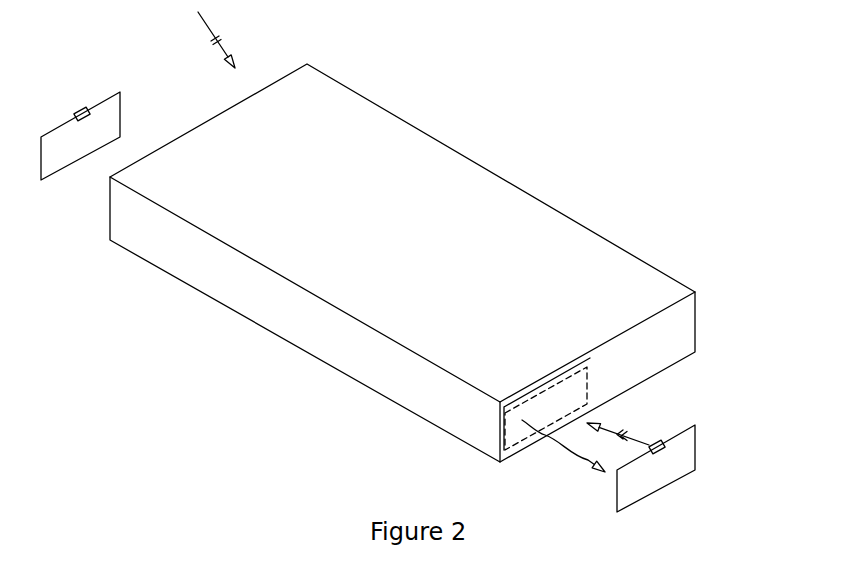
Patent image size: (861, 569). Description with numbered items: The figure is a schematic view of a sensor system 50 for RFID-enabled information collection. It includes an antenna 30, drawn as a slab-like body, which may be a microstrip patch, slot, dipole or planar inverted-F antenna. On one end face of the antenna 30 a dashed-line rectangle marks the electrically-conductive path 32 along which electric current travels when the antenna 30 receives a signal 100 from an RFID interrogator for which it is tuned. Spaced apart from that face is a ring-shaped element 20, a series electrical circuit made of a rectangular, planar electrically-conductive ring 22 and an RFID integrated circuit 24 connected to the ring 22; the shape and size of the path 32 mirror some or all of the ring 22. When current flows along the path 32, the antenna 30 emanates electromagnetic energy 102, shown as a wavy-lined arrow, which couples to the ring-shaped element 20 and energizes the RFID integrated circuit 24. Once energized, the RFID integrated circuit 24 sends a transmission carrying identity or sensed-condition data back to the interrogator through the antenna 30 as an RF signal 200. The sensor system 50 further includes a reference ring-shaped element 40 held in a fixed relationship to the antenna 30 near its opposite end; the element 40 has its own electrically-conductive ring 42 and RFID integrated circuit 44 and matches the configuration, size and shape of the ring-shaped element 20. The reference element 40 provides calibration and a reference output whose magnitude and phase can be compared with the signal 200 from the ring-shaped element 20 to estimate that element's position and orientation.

The signal 100 is at (210, 27).
The sensor system 50 is at (608, 133).
The antenna 30 is at (402, 298).
The electrically-conductive path 32 is at (522, 450).
The reference ring-shaped element 40 is at (78, 126).
The electrically-conductive ring 42 is at (52, 176).
The RFID integrated circuit 44 is at (100, 75).
The ring-shaped element 20 is at (698, 448).
The electrically-conductive ring 22 is at (673, 481).
The RFID integrated circuit 24 is at (667, 449).
The RF signal 200 is at (638, 440).
The electromagnetic energy 102 is at (584, 462).